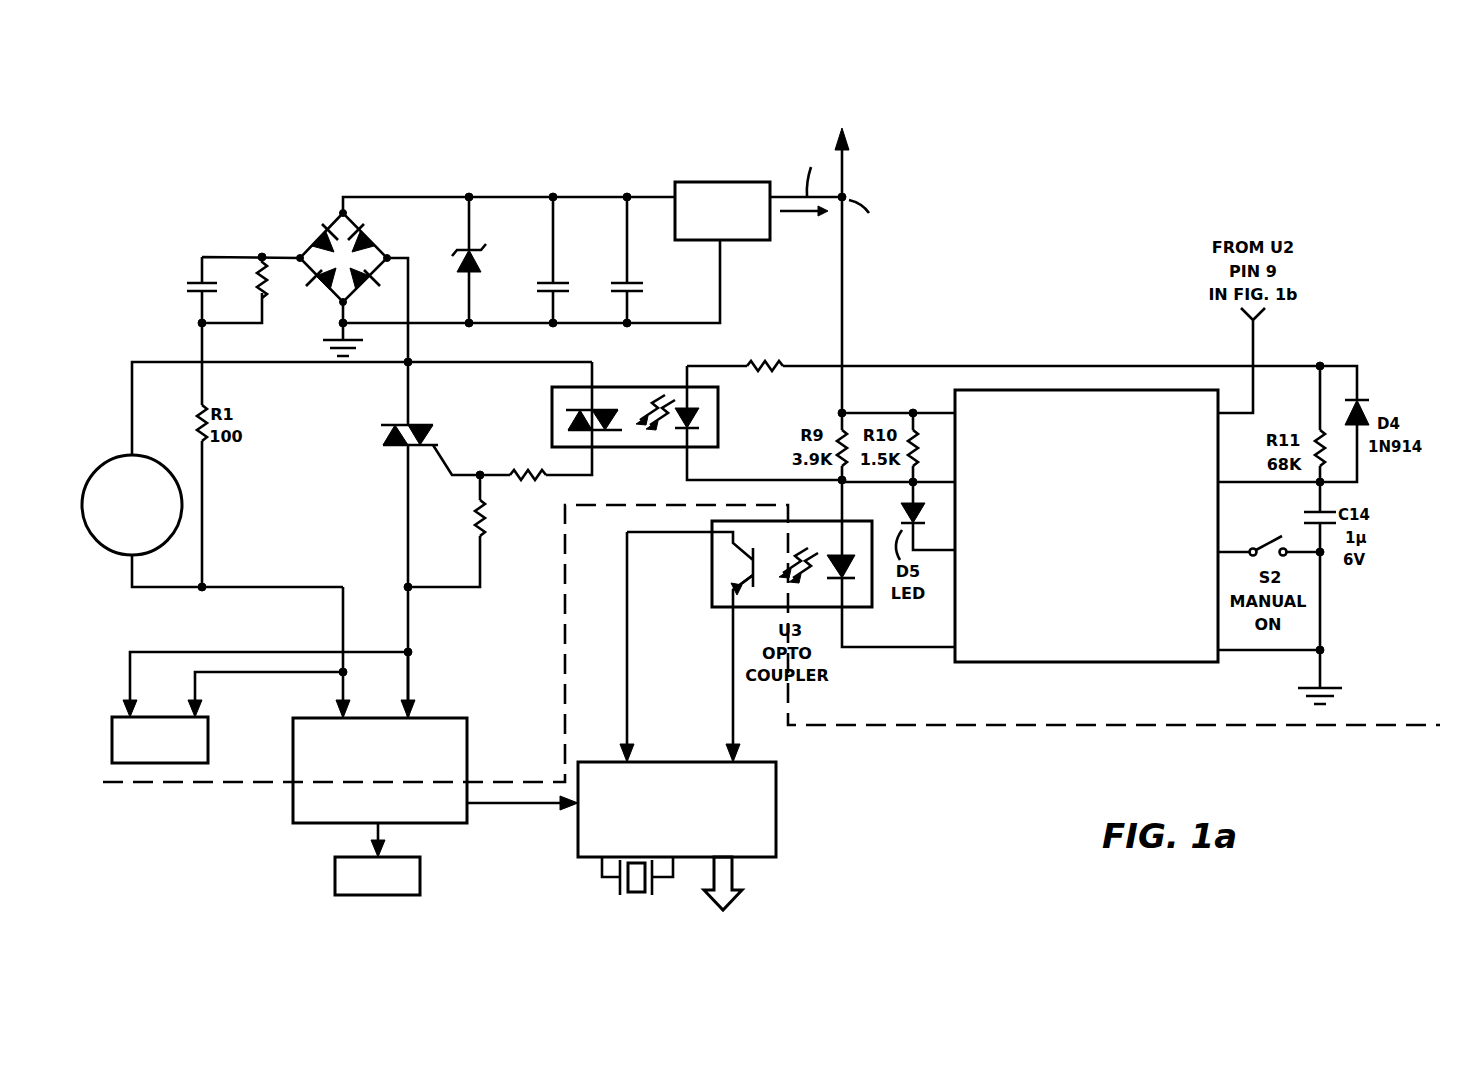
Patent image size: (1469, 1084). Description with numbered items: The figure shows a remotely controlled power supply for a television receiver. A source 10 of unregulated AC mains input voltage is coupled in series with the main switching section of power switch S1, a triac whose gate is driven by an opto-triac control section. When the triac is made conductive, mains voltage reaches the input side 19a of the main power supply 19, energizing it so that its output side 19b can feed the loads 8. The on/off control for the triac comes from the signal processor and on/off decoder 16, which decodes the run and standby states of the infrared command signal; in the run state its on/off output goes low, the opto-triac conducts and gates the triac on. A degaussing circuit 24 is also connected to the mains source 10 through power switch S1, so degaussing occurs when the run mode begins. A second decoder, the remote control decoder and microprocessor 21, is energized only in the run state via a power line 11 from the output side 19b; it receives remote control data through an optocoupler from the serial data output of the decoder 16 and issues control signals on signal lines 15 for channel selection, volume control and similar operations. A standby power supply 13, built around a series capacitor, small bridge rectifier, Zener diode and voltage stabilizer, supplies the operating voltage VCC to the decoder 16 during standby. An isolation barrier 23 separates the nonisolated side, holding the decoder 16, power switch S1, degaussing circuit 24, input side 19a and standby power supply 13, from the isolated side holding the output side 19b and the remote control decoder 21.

The loads 8 is at (420, 878).
The source of unregulated AC mains input voltage 10 is at (102, 470).
The power line 11 is at (493, 806).
The standby power supply 13 is at (472, 162).
The signal lines 15 is at (735, 868).
The signal processor and on/off decoder 16 is at (1145, 662).
The main power supply 19 is at (467, 727).
The input side of main power supply 19a is at (293, 720).
The output side of main power supply 19b is at (293, 805).
The remote control decoder and microprocessor 21 is at (776, 807).
The isolation barrier 23 is at (945, 727).
The degaussing circuit 24 is at (112, 720).
The power switch S1 is at (449, 403).